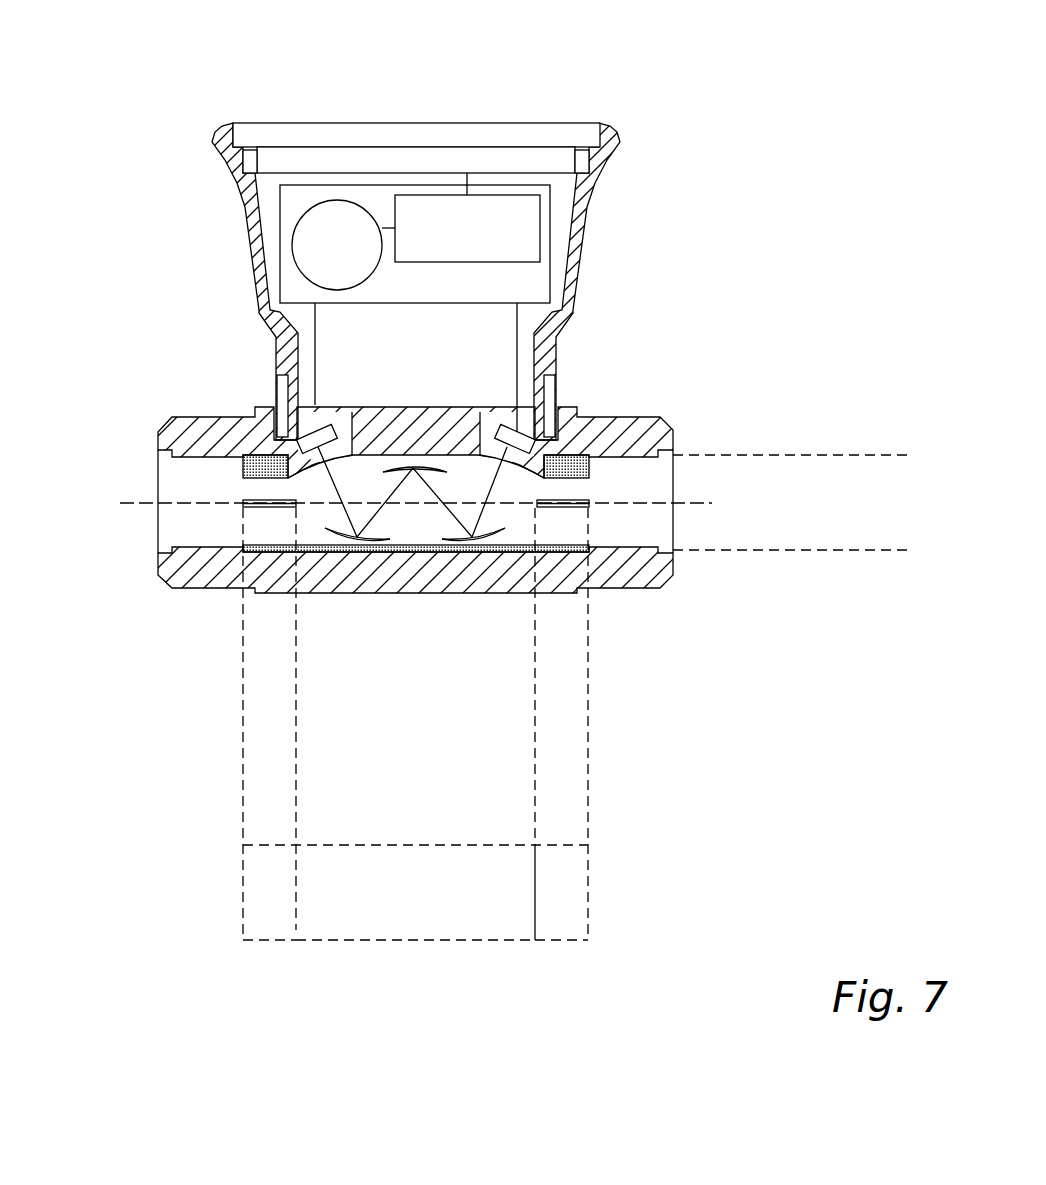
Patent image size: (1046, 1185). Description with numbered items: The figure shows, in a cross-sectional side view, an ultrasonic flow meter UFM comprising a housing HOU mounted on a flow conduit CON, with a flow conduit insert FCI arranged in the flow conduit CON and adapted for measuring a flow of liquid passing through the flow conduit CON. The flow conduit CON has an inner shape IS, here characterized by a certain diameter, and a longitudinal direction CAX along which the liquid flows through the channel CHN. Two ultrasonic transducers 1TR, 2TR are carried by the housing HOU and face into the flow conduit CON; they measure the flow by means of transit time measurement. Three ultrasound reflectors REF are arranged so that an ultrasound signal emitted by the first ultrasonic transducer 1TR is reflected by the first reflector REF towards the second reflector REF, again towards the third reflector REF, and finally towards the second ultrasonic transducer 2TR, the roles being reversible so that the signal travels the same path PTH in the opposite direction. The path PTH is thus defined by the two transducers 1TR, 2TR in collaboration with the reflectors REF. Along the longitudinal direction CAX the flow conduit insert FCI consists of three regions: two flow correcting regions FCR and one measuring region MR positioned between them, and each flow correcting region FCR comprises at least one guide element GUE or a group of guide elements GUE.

The ultrasonic flow meter UFM is at (660, 146).
The housing HOU is at (563, 273).
The first ultrasonic transducer 1TR is at (303, 440).
The second ultrasonic transducer 2TR is at (537, 455).
The flow conduit CON is at (183, 436).
The longitudinal direction CAX is at (695, 503).
The inner shape IS is at (872, 550).
The guide element GUE is at (258, 500).
The flow channel CHN is at (640, 519).
The path PTH is at (494, 483).
The ultrasound reflector REF is at (405, 478).
The flow conduit insert FCI is at (240, 518).
The flow correcting region FCR is at (273, 907).
The measuring region MR is at (402, 908).